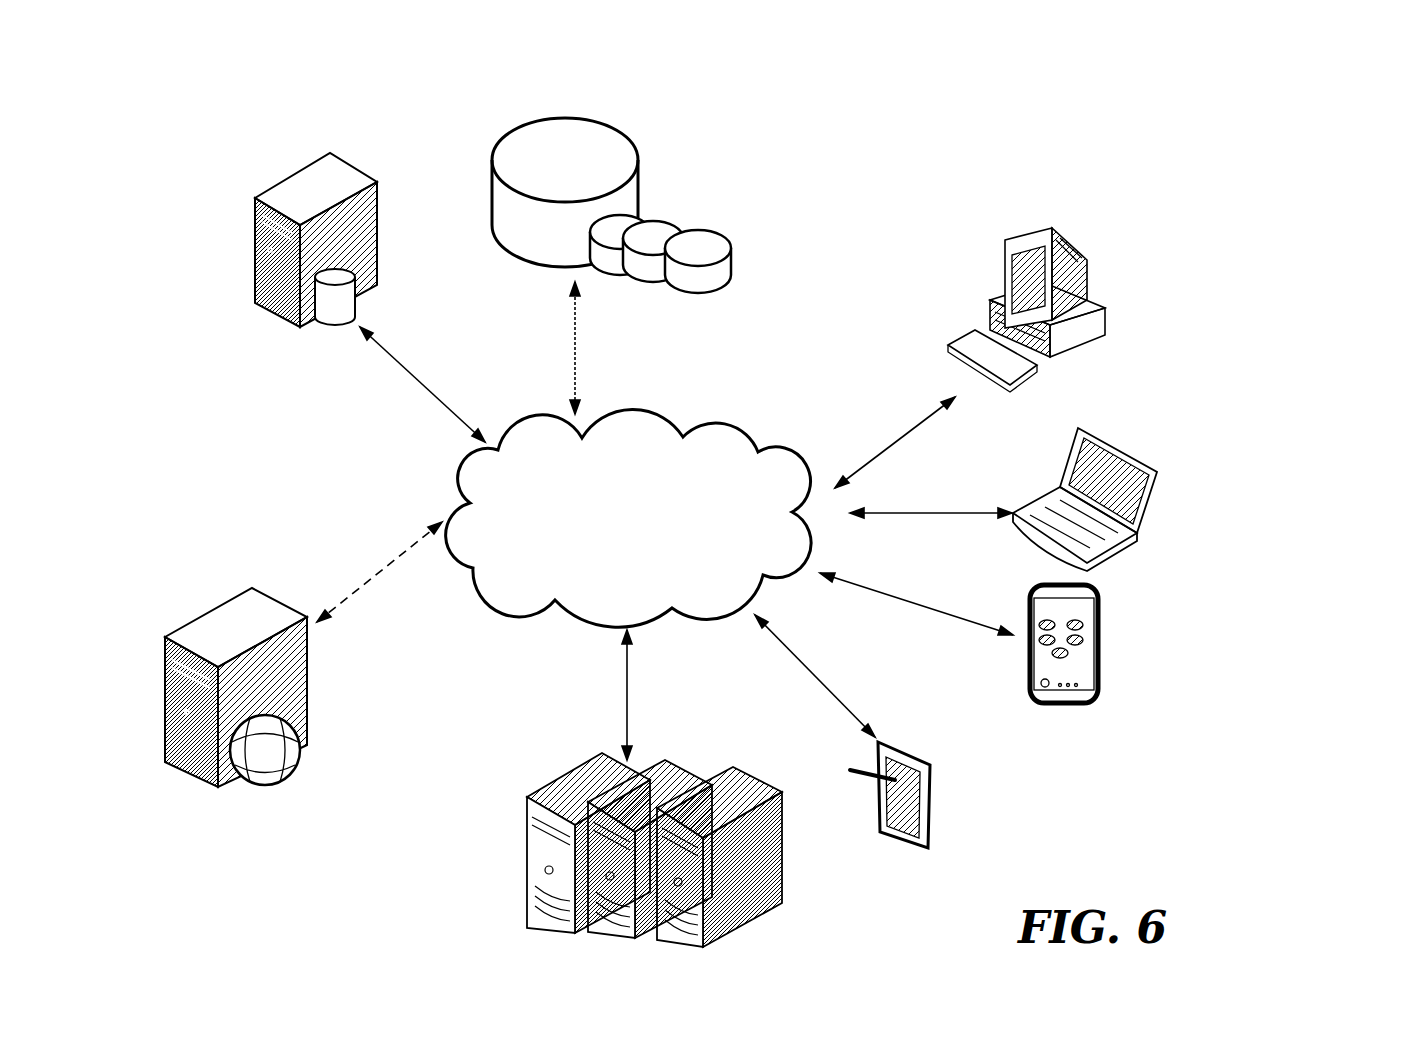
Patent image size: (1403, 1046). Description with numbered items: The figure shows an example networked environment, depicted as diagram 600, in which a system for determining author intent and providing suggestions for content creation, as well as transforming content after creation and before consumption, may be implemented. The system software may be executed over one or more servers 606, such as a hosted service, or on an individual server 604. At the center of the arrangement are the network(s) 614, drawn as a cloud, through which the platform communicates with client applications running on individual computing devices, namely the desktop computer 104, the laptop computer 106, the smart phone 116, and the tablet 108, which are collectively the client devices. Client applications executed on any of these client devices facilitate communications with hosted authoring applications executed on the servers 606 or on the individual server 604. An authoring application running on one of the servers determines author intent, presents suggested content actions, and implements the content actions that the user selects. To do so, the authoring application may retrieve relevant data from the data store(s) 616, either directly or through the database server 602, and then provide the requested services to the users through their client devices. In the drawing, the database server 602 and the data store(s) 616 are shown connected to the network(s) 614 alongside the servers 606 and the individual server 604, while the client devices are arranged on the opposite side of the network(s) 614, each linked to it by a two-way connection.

The diagram 600 is at (1265, 110).
The network(s) 614 is at (640, 398).
The database server 602 is at (315, 342).
The data store(s) 616 is at (644, 148).
The desktop computer 104 is at (1108, 208).
The laptop computer 106 is at (1164, 416).
The smart phone 116 is at (1117, 606).
The tablet 108 is at (937, 750).
The individual server 604 is at (200, 603).
The servers 606 is at (571, 763).